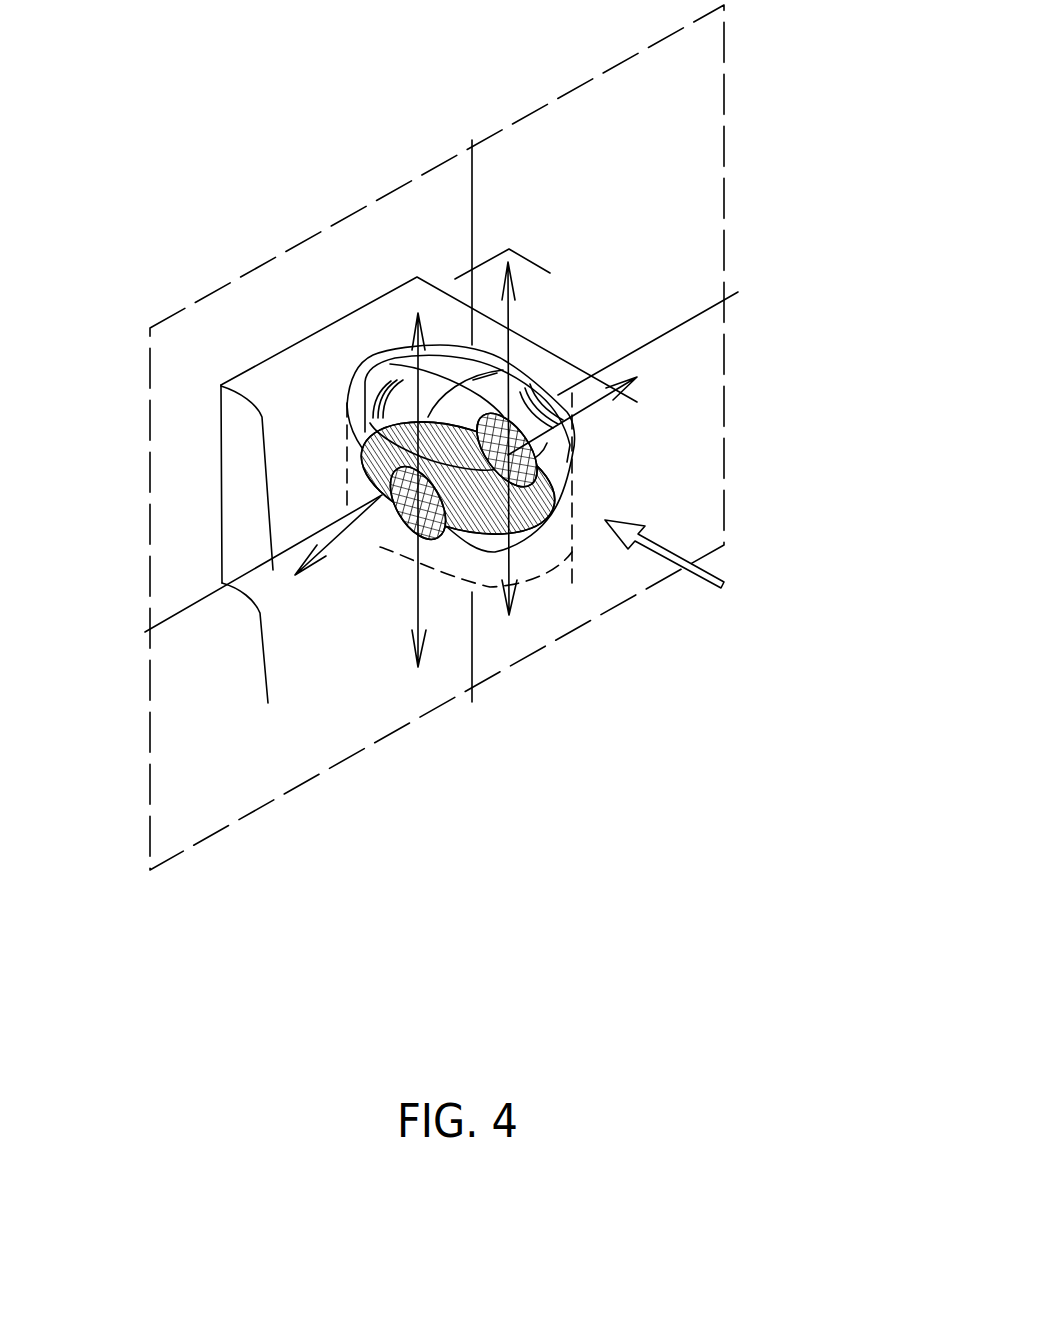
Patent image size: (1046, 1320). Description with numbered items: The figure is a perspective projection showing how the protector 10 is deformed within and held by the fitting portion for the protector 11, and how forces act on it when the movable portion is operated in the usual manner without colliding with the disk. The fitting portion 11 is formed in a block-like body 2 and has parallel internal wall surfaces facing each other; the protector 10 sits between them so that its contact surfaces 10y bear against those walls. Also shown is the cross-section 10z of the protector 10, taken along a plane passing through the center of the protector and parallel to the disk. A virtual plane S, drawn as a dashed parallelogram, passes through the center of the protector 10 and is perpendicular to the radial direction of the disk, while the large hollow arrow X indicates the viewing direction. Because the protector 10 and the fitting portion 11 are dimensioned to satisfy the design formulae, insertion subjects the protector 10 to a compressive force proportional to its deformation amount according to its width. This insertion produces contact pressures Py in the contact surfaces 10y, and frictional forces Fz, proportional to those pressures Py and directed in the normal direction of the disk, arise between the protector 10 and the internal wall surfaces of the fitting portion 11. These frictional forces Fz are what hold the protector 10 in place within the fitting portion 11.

The block / holder body 2 is at (221, 448).
The protector 10 is at (387, 357).
The fitting portion for the protector 11 is at (390, 367).
The contact surfaces 10y is at (572, 437).
The cross-section of the protector 10z is at (550, 485).
The virtual plane S is at (724, 120).
The pressures Py is at (580, 407).
The frictional forces Fz is at (525, 570).
The viewing direction X is at (697, 577).